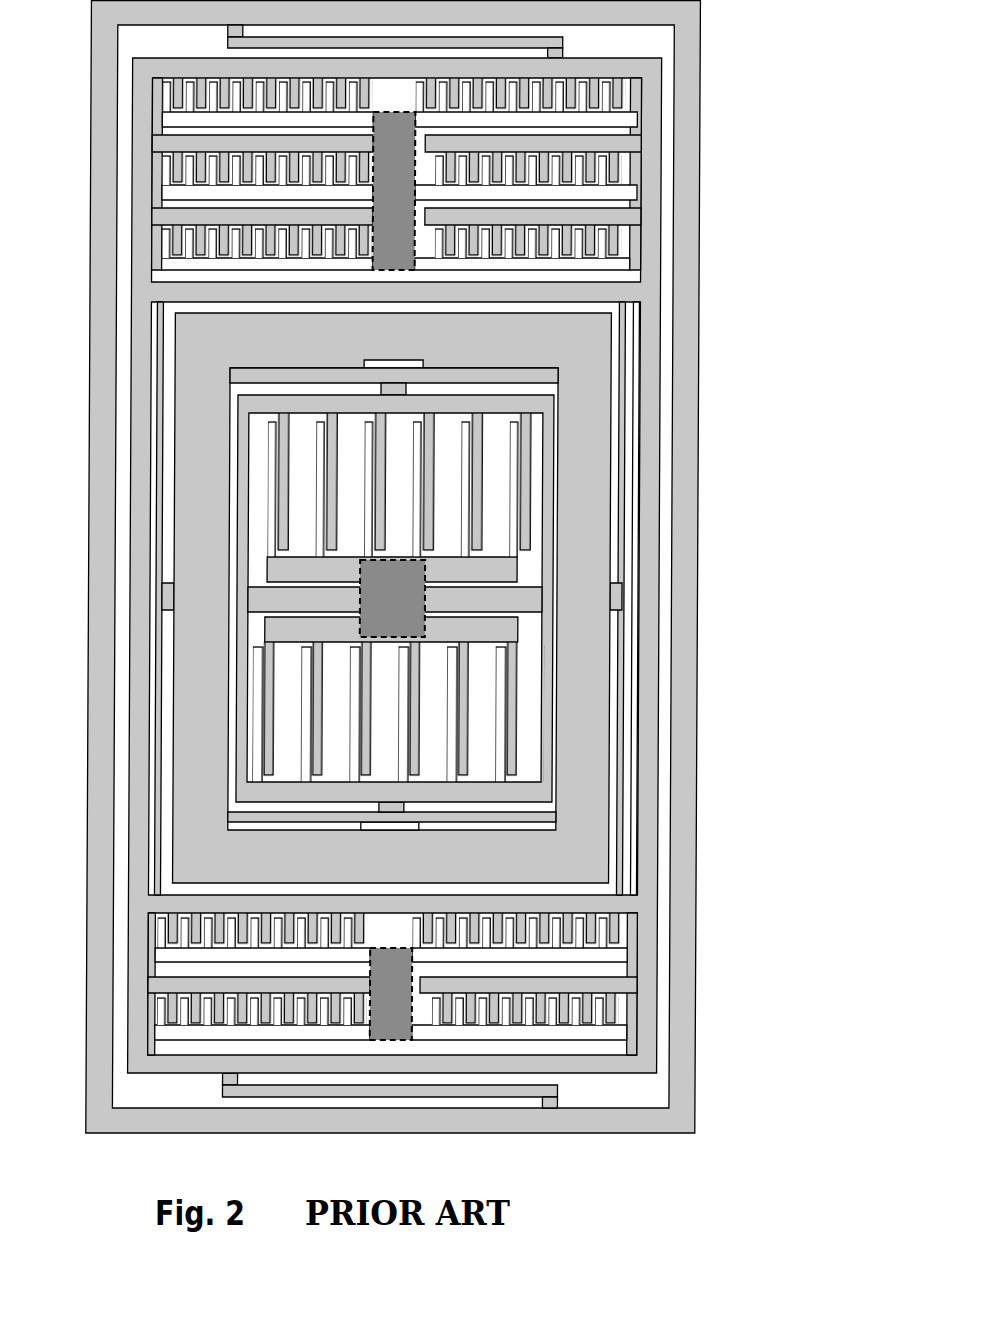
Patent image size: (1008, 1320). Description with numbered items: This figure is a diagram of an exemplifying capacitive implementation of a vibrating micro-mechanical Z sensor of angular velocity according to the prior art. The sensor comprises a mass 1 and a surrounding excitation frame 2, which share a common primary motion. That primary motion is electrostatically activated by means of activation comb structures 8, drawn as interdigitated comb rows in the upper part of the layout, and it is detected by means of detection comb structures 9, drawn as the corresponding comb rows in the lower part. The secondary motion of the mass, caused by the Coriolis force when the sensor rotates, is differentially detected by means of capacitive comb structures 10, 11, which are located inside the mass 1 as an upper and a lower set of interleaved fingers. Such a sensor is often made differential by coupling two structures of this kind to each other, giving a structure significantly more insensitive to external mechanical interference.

The mass 1 is at (610, 390).
The excitation frame 2 is at (632, 835).
The activation comb structures 8 is at (560, 137).
The detection comb structures 9 is at (543, 977).
The capacitive comb structures 10 is at (422, 690).
The capacitive comb structures 11 is at (385, 507).